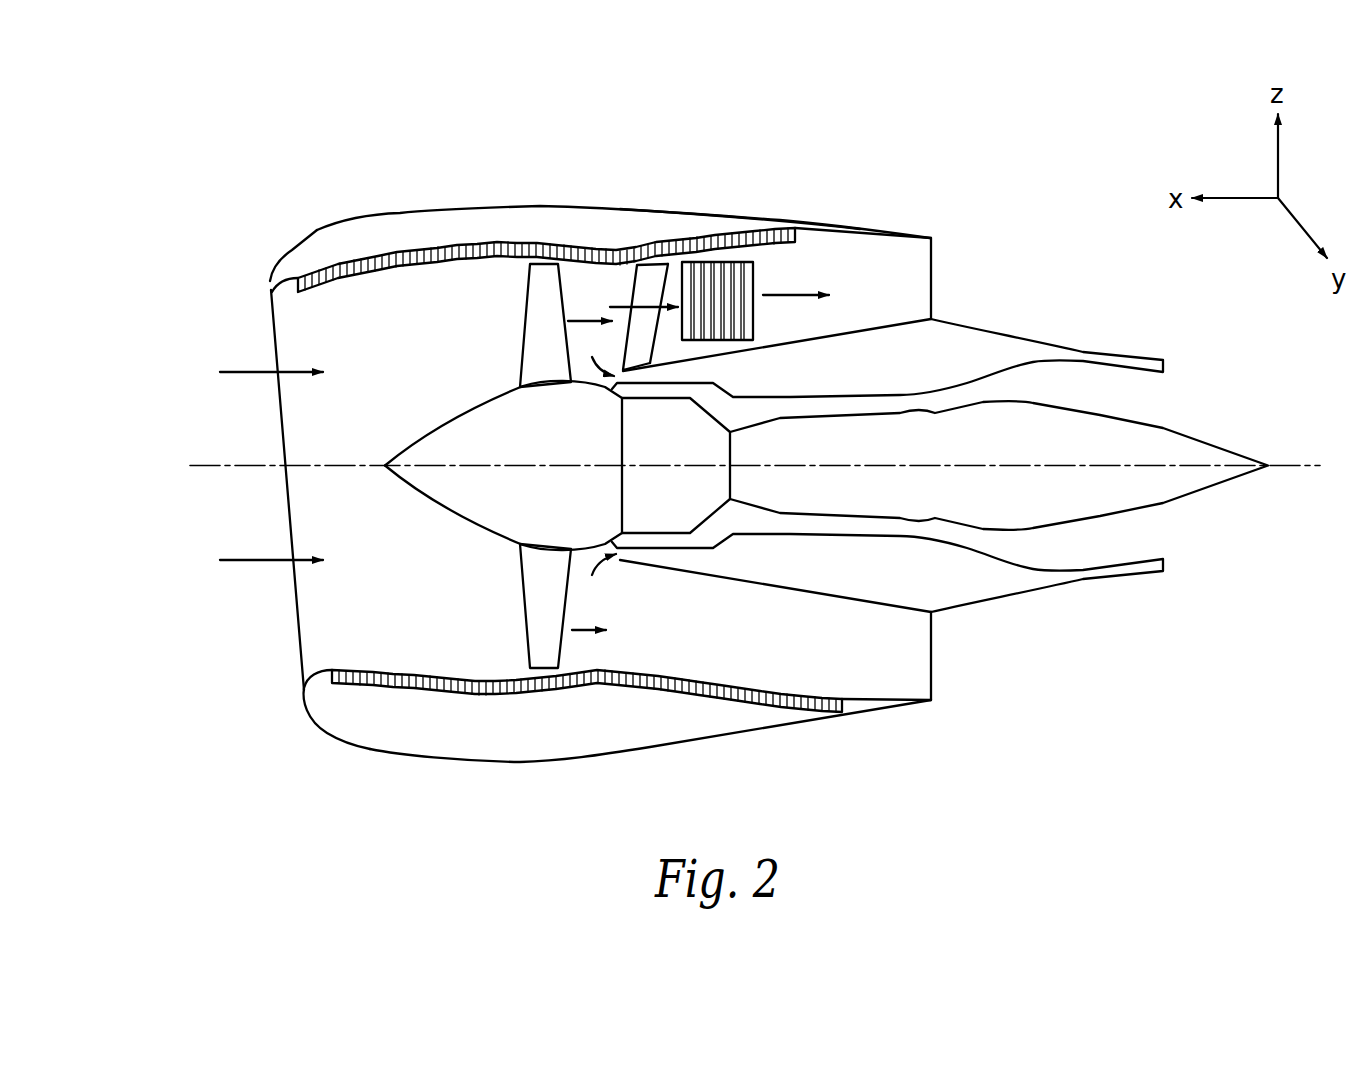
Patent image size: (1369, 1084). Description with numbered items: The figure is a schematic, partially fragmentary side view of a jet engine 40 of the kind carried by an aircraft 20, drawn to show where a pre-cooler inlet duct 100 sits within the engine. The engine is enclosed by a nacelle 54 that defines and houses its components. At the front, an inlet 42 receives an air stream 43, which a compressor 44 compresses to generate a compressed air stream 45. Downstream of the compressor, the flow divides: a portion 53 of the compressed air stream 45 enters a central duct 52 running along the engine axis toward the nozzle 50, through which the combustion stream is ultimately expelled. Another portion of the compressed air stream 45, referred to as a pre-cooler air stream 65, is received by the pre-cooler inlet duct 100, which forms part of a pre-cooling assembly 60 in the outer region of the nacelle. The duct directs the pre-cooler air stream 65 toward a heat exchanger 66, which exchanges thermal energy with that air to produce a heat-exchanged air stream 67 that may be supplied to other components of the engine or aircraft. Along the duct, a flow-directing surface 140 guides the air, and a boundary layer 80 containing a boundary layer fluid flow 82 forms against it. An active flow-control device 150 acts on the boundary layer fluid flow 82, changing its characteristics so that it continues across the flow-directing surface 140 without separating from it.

The aircraft 20 is at (197, 192).
The jet engine 40 is at (195, 240).
The inlet 42 is at (217, 328).
The air stream 43 is at (242, 373).
The compressor 44 is at (528, 287).
The compressed air stream 45 is at (570, 323).
The nozzle 50 is at (1137, 352).
The central duct 52 is at (953, 578).
The portion of compressed air stream 53 is at (598, 372).
The nacelle 54 is at (393, 215).
The pre-cooling assembly 60 is at (717, 207).
The pre-cooler air stream 65 is at (626, 308).
The heat exchanger 66 is at (756, 278).
The heat-exchanged air stream 67 is at (808, 297).
The boundary layer 80 is at (638, 353).
The boundary layer fluid flow 82 is at (660, 350).
The pre-cooler inlet duct 100 is at (625, 280).
The flow-directing surface 140 is at (652, 282).
The active flow-control device 150 is at (650, 328).